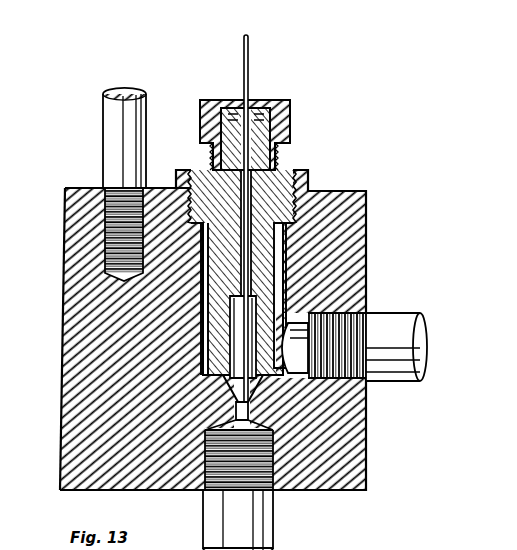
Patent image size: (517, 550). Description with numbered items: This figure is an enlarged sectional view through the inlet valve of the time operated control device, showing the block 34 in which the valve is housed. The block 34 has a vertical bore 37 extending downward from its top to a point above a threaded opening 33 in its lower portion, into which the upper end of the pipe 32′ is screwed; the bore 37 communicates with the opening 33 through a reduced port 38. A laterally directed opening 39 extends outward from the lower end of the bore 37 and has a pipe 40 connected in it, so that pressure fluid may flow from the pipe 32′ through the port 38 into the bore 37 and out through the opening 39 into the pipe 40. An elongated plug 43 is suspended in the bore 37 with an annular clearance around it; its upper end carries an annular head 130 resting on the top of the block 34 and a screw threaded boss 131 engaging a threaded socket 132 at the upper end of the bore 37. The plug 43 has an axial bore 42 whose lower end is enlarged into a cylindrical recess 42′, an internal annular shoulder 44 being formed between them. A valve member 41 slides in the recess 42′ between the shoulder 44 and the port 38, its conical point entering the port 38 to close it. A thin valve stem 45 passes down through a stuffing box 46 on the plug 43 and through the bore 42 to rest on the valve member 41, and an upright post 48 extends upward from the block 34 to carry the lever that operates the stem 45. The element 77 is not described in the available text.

The pipe section 32′ is at (240, 512).
The threaded opening 33 is at (268, 452).
The block 34 is at (67, 425).
The vertical bore 37 is at (190, 338).
The reduced port 38 is at (223, 403).
The laterally directed opening 39 is at (288, 312).
The pipe 40 is at (375, 313).
The valve member 41 is at (195, 372).
The axial bore 42 is at (242, 175).
The valve chamber or recess 42′ is at (283, 300).
The support or plug 43 is at (272, 245).
The internal annular shoulder 44 is at (200, 282).
The valve rod or stem 45 is at (240, 62).
The stuffing box 46 is at (252, 93).
The upright post 48 is at (110, 127).
The connection 77 is at (17, 199).
The annular flange or head 130 is at (290, 182).
The screw threaded boss 131 is at (185, 192).
The screw threaded socket 132 is at (330, 198).